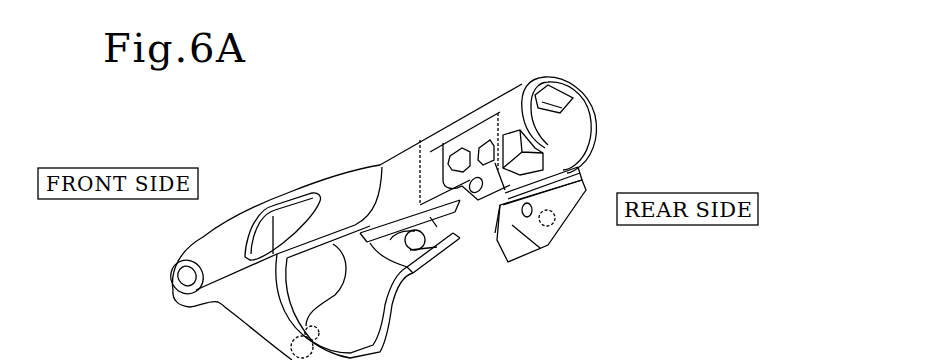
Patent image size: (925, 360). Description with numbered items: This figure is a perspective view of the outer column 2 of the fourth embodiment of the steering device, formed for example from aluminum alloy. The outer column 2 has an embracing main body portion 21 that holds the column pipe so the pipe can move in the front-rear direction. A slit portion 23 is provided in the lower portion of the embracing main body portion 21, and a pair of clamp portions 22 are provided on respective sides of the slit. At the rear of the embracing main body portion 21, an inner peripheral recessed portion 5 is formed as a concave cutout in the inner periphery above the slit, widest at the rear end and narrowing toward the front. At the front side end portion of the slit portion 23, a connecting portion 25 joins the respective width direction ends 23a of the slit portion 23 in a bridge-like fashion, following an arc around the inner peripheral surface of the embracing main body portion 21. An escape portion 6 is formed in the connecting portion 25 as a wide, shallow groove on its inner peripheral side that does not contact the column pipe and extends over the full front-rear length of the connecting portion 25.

The outer column 2 is at (499, 92).
The inner peripheral recessed portion 5 is at (565, 92).
The embracing main body portion 21 is at (597, 134).
The clamp portion 22 is at (548, 260).
The slit portion 23 is at (447, 225).
The width direction end of the slit portion 23a is at (421, 150).
The connecting portion 25 is at (380, 272).
The escape portion 6 is at (415, 250).